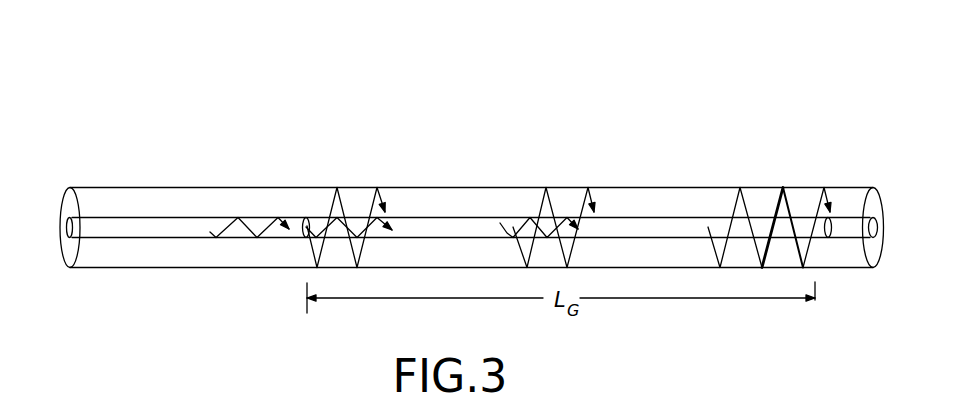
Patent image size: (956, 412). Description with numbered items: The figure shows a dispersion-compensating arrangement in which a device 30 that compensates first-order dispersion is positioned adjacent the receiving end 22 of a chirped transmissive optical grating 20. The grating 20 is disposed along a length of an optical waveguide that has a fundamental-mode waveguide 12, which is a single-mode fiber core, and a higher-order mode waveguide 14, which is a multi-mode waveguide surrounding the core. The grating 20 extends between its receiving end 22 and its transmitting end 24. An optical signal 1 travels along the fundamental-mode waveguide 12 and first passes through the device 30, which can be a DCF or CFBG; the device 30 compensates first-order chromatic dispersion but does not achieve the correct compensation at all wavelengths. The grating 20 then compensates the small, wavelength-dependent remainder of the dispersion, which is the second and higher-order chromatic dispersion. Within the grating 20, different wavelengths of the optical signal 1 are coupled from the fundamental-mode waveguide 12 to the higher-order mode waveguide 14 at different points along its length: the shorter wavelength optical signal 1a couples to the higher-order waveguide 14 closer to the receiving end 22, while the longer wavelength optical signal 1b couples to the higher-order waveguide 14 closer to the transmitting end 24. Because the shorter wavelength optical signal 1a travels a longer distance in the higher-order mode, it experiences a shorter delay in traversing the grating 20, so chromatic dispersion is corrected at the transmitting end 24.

The device that compensates first-order dispersion 30 is at (168, 155).
The optical signal 1 is at (238, 217).
The shorter wavelength optical signal 1a is at (342, 200).
The longer wavelength optical signal 1b is at (503, 230).
The fundamental-mode waveguide 12 is at (427, 230).
The higher-order mode waveguide 14 is at (407, 198).
The chirped transmissive optical grating 20 is at (552, 167).
The receiving end 22 is at (303, 210).
The transmitting end 24 is at (833, 222).